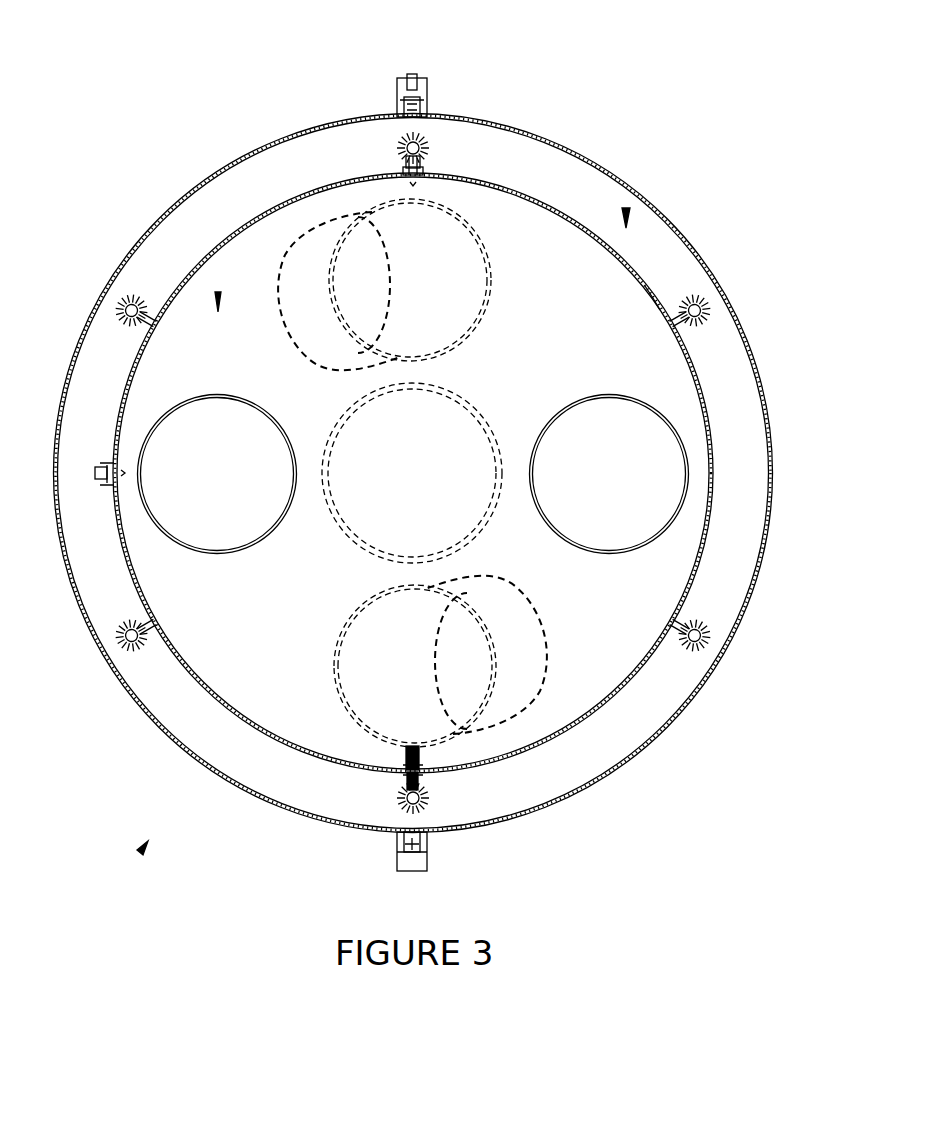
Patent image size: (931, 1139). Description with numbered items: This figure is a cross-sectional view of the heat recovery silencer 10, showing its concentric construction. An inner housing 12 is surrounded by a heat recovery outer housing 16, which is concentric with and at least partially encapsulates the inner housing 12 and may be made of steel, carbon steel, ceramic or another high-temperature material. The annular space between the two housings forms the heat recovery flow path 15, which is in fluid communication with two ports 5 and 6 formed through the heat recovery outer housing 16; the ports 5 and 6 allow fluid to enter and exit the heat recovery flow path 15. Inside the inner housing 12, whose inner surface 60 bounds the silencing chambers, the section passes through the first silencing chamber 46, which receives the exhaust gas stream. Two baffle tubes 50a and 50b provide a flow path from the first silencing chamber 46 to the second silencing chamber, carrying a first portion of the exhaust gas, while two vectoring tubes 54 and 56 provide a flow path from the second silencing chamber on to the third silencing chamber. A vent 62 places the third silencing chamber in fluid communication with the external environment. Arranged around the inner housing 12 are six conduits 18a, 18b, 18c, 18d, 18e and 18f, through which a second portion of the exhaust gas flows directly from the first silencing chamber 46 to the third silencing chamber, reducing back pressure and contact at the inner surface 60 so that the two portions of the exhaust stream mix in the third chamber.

The port 5 is at (397, 90).
The port 6 is at (397, 863).
The heat recovery silencer 10 is at (142, 852).
The inner housing 12 is at (288, 198).
The heat recovery flow path 15 is at (626, 208).
The heat recovery outer housing 16 is at (643, 750).
The conduit 18a is at (425, 146).
The conduit 18b is at (703, 308).
The conduit 18c is at (706, 640).
The conduit 18d is at (425, 800).
The conduit 18e is at (122, 640).
The conduit 18f is at (118, 311).
The first silencing chamber 46 is at (218, 292).
The baffle tube 50a is at (233, 553).
The baffle tube 50b is at (595, 553).
The vectoring tube 54 is at (336, 662).
The vectoring tube 56 is at (490, 286).
The inner surface 60 is at (645, 286).
The vent 62 is at (480, 403).